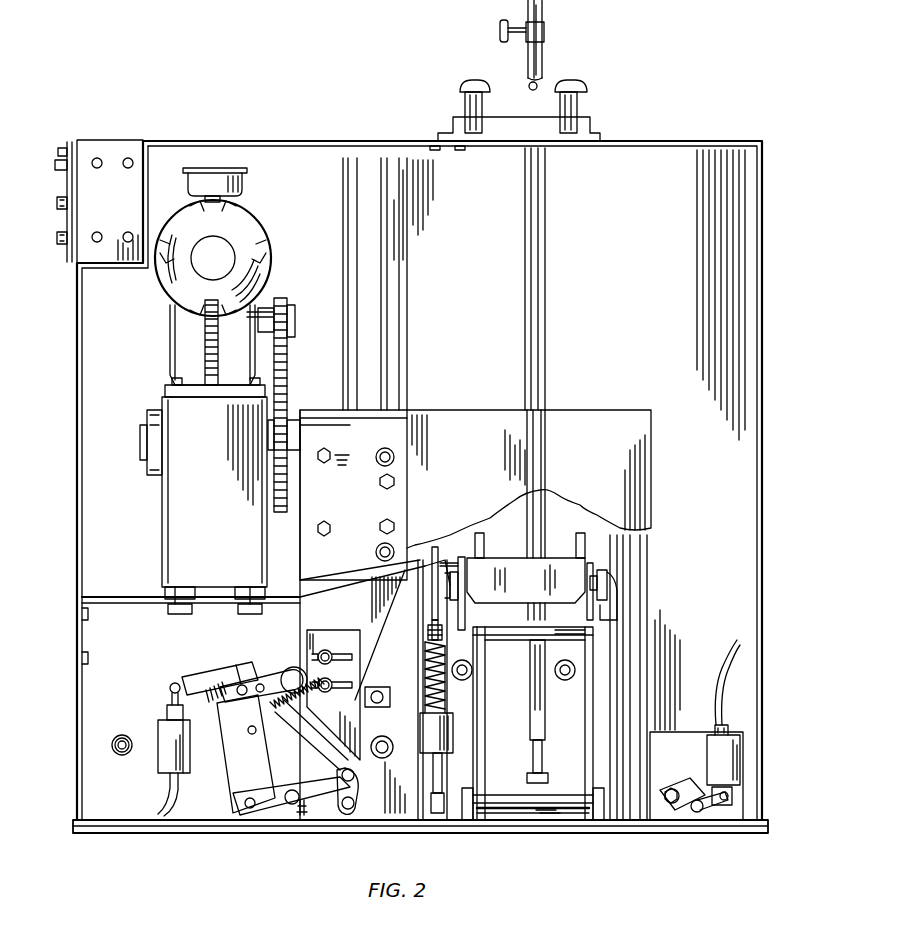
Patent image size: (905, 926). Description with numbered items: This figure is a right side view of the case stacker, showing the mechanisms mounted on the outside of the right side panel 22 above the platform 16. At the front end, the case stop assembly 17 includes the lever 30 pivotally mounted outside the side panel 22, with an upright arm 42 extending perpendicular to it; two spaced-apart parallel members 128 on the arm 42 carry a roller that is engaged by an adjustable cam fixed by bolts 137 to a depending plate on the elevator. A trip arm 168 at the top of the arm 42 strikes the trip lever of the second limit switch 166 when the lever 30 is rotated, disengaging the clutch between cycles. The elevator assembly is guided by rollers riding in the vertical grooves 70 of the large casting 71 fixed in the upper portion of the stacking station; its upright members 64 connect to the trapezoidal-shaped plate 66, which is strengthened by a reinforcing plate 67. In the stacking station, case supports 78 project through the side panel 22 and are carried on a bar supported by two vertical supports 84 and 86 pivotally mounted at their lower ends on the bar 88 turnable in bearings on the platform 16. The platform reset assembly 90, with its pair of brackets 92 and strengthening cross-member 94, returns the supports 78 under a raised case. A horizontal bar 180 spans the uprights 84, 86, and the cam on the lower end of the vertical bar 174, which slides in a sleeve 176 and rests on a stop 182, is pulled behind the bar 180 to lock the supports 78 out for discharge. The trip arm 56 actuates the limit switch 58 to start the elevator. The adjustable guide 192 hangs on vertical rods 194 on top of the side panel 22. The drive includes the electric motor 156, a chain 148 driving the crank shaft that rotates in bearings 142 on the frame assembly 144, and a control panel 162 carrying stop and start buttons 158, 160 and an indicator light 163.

The platform 16 is at (125, 830).
The case stop assembly 17 is at (205, 800).
The side panel 22 is at (681, 461).
The lever 30 is at (270, 812).
The arm 42 is at (252, 782).
The trip arm 56 is at (680, 808).
The limit switch 58 is at (718, 755).
The upright members 64 is at (620, 592).
The trapezoidal-shaped plate 66 is at (354, 497).
The reinforcing plate 67 is at (474, 478).
The vertical grooves 70 is at (368, 183).
The casting 71 is at (395, 259).
The case supports 78 is at (610, 574).
The vertical support 84 is at (585, 762).
The vertical support 86 is at (474, 762).
The bar 88 is at (533, 815).
The platform reset assembly 90 is at (460, 556).
The brackets 92 is at (473, 537).
The cross-member 94 is at (528, 592).
The parallel members 128 is at (268, 682).
The bolts 137 is at (324, 684).
The bearings 142 is at (138, 436).
The frame assembly 144 is at (157, 541).
The chain 148 is at (312, 374).
The electric motor 156 is at (250, 263).
The stop button 158 is at (57, 196).
The start button 160 is at (50, 238).
The control panel 162 is at (116, 150).
The indicator light 163 is at (48, 166).
The second limit switch 166 is at (168, 749).
The trip arm 168 is at (210, 678).
The vertical bars 174 is at (535, 67).
The sleeve 176 is at (533, 272).
The horizontal bar 180 is at (493, 651).
The stop 182 is at (535, 792).
The adjustable guides 192 is at (486, 133).
The vertical rods 194 is at (460, 104).